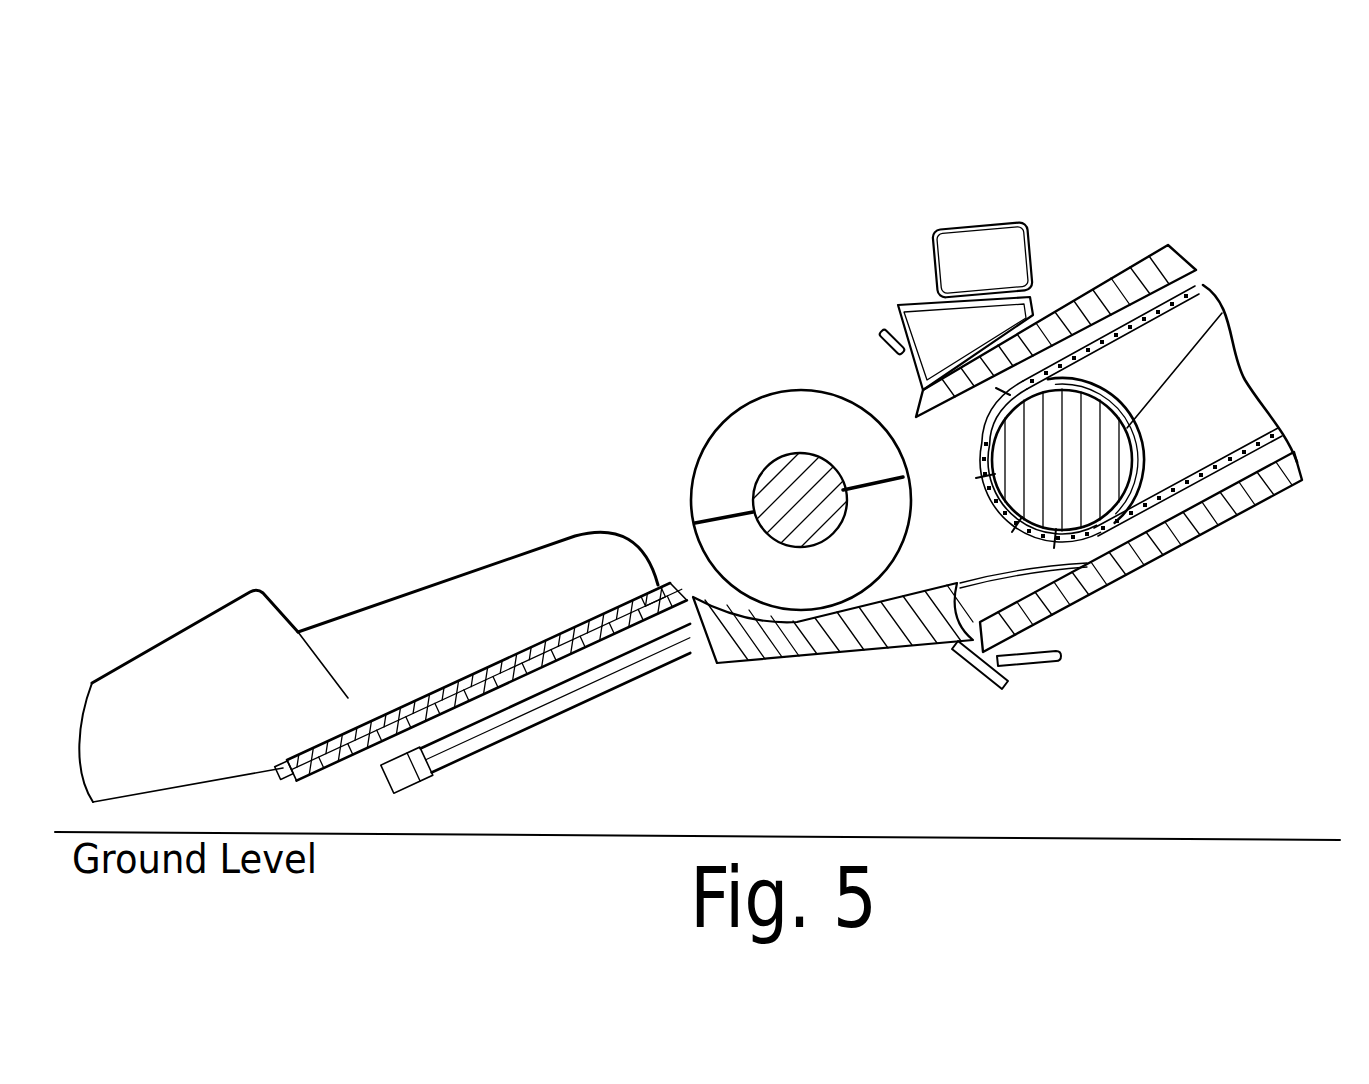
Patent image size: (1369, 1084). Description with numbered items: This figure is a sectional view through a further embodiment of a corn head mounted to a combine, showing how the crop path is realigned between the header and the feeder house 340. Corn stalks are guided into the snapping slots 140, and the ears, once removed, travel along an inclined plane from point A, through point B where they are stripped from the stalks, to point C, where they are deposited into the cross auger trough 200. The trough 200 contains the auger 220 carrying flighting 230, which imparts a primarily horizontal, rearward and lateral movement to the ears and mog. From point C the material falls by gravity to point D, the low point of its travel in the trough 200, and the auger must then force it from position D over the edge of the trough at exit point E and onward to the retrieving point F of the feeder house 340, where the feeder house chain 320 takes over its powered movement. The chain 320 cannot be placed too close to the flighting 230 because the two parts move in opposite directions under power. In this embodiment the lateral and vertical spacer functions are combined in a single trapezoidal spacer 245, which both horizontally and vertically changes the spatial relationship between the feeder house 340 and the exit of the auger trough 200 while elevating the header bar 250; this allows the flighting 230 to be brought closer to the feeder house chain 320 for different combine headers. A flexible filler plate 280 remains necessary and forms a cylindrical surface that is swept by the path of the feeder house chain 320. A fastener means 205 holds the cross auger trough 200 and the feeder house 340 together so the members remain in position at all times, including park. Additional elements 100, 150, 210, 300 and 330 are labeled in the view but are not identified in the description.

The hopper 100 is at (198, 700).
The snapping slots 140 is at (498, 617).
The hopper cover 150 is at (578, 585).
The cross auger trough 200 is at (750, 620).
The fastener means 205 is at (1037, 660).
The rotor blade 210 is at (722, 513).
The auger 220 is at (795, 498).
The flighting 230 is at (860, 453).
The trapezoidal spacer 245 is at (923, 342).
The header bar 250 is at (985, 263).
The flexible filler plate 280 is at (1000, 580).
The drum 300 is at (1053, 463).
The feeder house chain 320 is at (1147, 310).
The housing side wall 330 is at (1225, 305).
The feeder house 340 is at (1242, 490).
The point A is at (360, 799).
The point B is at (535, 673).
The point C is at (693, 605).
The point D is at (795, 623).
The exit point E is at (950, 583).
The retrieving point F is at (1085, 570).